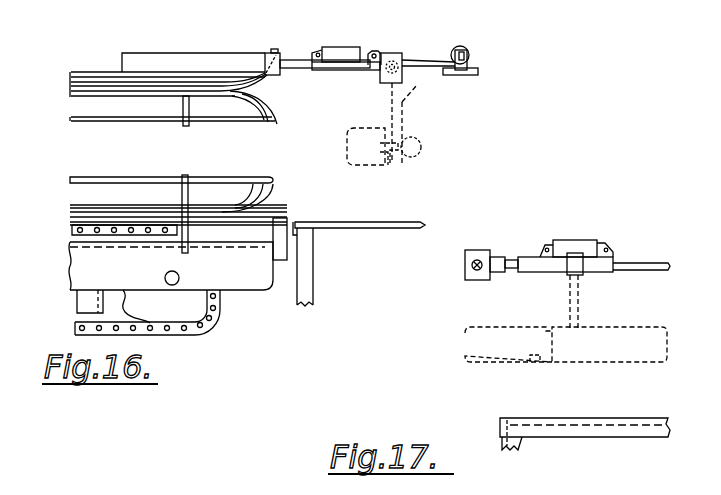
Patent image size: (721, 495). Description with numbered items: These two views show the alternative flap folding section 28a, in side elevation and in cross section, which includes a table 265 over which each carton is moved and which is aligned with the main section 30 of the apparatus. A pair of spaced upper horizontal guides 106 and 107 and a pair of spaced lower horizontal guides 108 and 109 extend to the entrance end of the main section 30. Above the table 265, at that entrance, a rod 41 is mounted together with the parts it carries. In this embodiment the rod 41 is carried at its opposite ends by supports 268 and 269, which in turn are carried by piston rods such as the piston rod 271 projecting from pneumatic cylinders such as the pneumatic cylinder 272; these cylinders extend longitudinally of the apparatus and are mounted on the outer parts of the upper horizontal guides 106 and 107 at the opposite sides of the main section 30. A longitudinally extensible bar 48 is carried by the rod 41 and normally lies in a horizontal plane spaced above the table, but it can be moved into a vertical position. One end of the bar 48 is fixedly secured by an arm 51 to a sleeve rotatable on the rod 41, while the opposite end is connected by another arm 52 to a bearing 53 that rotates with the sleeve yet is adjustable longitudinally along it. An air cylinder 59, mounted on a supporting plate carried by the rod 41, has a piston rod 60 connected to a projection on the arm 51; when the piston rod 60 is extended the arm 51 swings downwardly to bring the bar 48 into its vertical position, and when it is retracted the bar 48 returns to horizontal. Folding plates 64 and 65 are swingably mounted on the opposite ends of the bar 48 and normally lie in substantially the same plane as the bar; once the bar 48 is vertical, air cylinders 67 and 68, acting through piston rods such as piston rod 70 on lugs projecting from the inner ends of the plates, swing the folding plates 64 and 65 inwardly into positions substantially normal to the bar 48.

In FIG. 16, the upper horizontal guide 106 is at (105, 80).
In FIG. 16, the pneumatic cylinder 272 is at (223, 60).
In FIG. 16, the upper horizontal guide 107 is at (262, 104).
In FIG. 16, the piston rod 271 is at (293, 70).
In FIG. 17, the piston rod 271 is at (465, 276).
In FIG. 16, the air cylinder 59 is at (343, 47).
In FIG. 16, the piston rod 60 is at (370, 52).
In FIG. 16, the support 268 is at (398, 53).
In FIG. 16, the air cylinder 67 is at (467, 51).
In FIG. 16, the folding plate 64 is at (468, 75).
In FIG. 16, the alternative flap folding section 28a is at (483, 62).
In FIG. 17, the alternative flap folding section 28a is at (620, 244).
In FIG. 16, the arm 51 is at (412, 67).
In FIG. 16, the main section 30 is at (72, 138).
In FIG. 16, the lower horizontal guide 108 is at (240, 181).
In FIG. 16, the lower horizontal guide 109 is at (263, 219).
In FIG. 16, the table 265 is at (403, 220).
In FIG. 17, the table 265 is at (622, 419).
In FIG. 17, the support 269 is at (465, 259).
In FIG. 17, the rod 41 is at (512, 258).
In FIG. 17, the piston rod 70 is at (550, 244).
In FIG. 17, the air cylinder 68 is at (575, 242).
In FIG. 17, the bearing 53 is at (583, 275).
In FIG. 17, the longitudinally extensible bar 48 is at (650, 270).
In FIG. 17, the arm 52 is at (570, 305).
In FIG. 17, the folding plate 65 is at (510, 357).